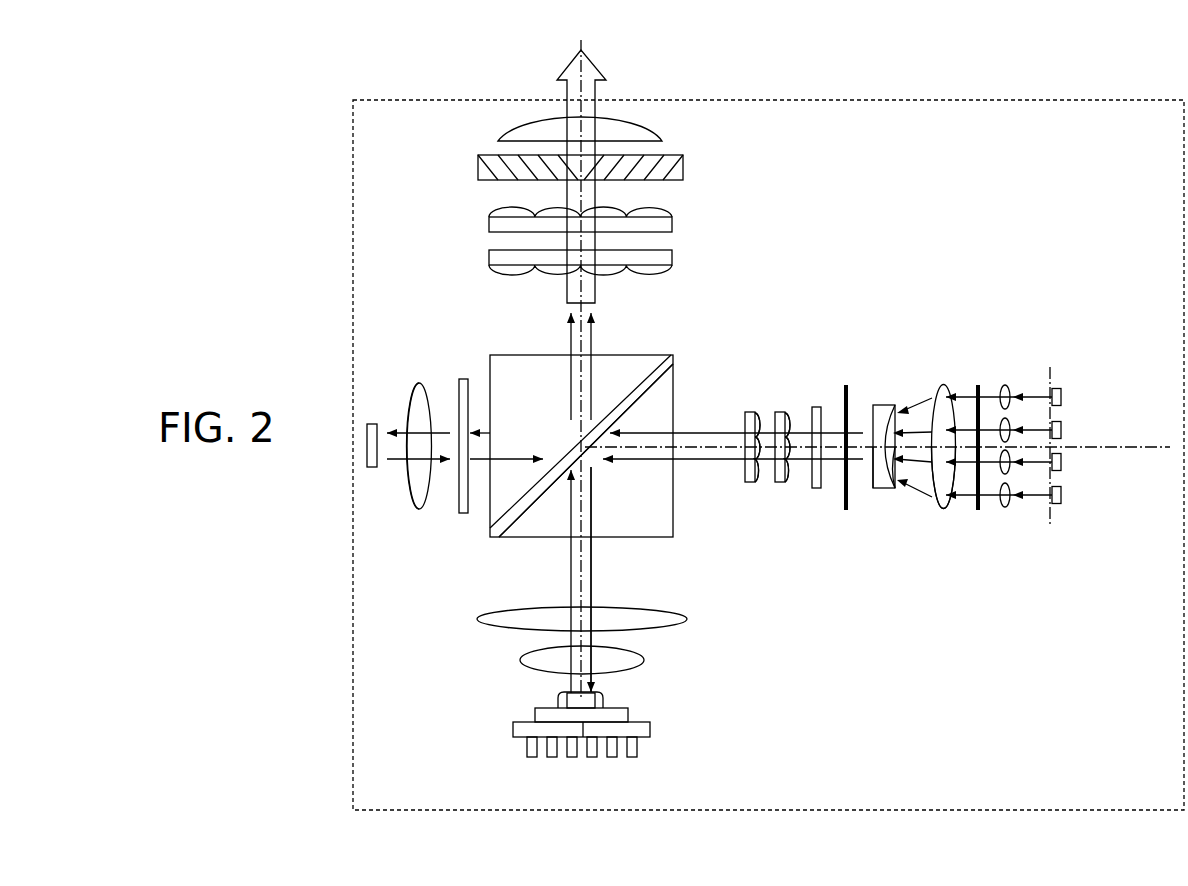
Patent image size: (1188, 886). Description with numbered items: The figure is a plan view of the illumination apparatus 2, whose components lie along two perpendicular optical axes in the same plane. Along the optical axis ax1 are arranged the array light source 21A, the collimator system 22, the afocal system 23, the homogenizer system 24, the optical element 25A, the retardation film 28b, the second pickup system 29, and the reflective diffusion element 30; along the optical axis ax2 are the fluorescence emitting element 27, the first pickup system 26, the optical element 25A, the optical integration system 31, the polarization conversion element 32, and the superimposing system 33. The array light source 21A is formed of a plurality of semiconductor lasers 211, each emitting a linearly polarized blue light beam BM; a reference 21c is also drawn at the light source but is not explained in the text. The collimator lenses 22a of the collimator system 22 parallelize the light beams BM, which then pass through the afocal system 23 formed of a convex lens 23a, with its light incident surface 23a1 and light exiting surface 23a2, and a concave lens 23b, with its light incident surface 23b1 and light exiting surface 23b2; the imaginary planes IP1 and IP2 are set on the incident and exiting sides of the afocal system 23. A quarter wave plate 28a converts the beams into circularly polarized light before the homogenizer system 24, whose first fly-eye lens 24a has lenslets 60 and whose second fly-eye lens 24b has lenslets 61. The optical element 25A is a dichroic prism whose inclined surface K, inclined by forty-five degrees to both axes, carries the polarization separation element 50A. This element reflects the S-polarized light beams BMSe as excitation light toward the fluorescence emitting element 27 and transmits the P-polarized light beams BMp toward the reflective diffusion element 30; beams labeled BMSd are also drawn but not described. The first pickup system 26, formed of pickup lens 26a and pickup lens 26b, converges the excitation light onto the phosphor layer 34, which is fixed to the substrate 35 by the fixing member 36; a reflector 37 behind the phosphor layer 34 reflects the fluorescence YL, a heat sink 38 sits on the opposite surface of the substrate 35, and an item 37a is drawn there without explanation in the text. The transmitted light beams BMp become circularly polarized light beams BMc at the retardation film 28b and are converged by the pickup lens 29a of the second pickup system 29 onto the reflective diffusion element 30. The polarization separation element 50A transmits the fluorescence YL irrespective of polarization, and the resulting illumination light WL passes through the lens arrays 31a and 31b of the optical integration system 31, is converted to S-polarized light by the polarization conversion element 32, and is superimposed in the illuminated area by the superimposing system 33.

The illumination apparatus 2 is at (1006, 100).
The array light source 21A is at (1089, 443).
The semiconductor laser 211 is at (1062, 397).
The light emitting surface 21c is at (1053, 518).
The collimator system 22 is at (1014, 418).
The collimator lens 22a is at (1003, 383).
The afocal system 23 is at (929, 440).
The convex lens 23a is at (939, 380).
The light incident surface 23a1 is at (955, 488).
The light exiting surface 23a2 is at (937, 490).
The concave lens 23b is at (884, 400).
The light incident surface 23b1 is at (898, 478).
The light exiting surface 23b2 is at (873, 478).
The homogenizer system 24 is at (756, 384).
The first fly-eye lens 24a is at (780, 408).
The second fly-eye lens 24b is at (750, 408).
The optical element 25A is at (673, 530).
The first pickup system 26 is at (633, 649).
The pickup lens 26a is at (680, 627).
The pickup lens 26b is at (643, 660).
The fluorescence emitting element 27 is at (597, 740).
The quarter wave plate 28a is at (816, 407).
The retardation film 28b is at (465, 379).
The second pickup system 29 is at (415, 378).
The pickup lens 29a is at (407, 487).
The reflective diffusion element 30 is at (370, 424).
The optical integration system 31 is at (642, 223).
The lens array 31a is at (673, 253).
The lens array 31b is at (673, 223).
The polarization conversion element 32 is at (683, 165).
The superimposing system 33 is at (657, 130).
The phosphor layer 34 is at (560, 700).
The substrate 35 is at (535, 715).
The fixing member 36 is at (605, 702).
The reflector 37 is at (593, 722).
The heat radiation base 37a is at (583, 718).
The heat sink 38 is at (513, 729).
The polarization separation element 50A is at (655, 358).
The lenslet 60 is at (785, 482).
The lenslet 61 is at (752, 482).
The inclined surface K is at (635, 380).
The imaginary plane IP1 is at (978, 385).
The imaginary plane IP2 is at (846, 385).
The optical axis ax1 is at (1147, 447).
The optical axis ax2 is at (587, 45).
The light beam BM is at (1032, 397).
The light beam of P-polarization component BMp is at (527, 432).
The circularly polarized light beam BMc is at (442, 430).
The S-polarized excitation light (diffused) BMSd is at (593, 377).
The light beam of S-polarization component BMSe is at (592, 588).
The fluorescence YL is at (570, 395).
The illumination light WL is at (563, 90).